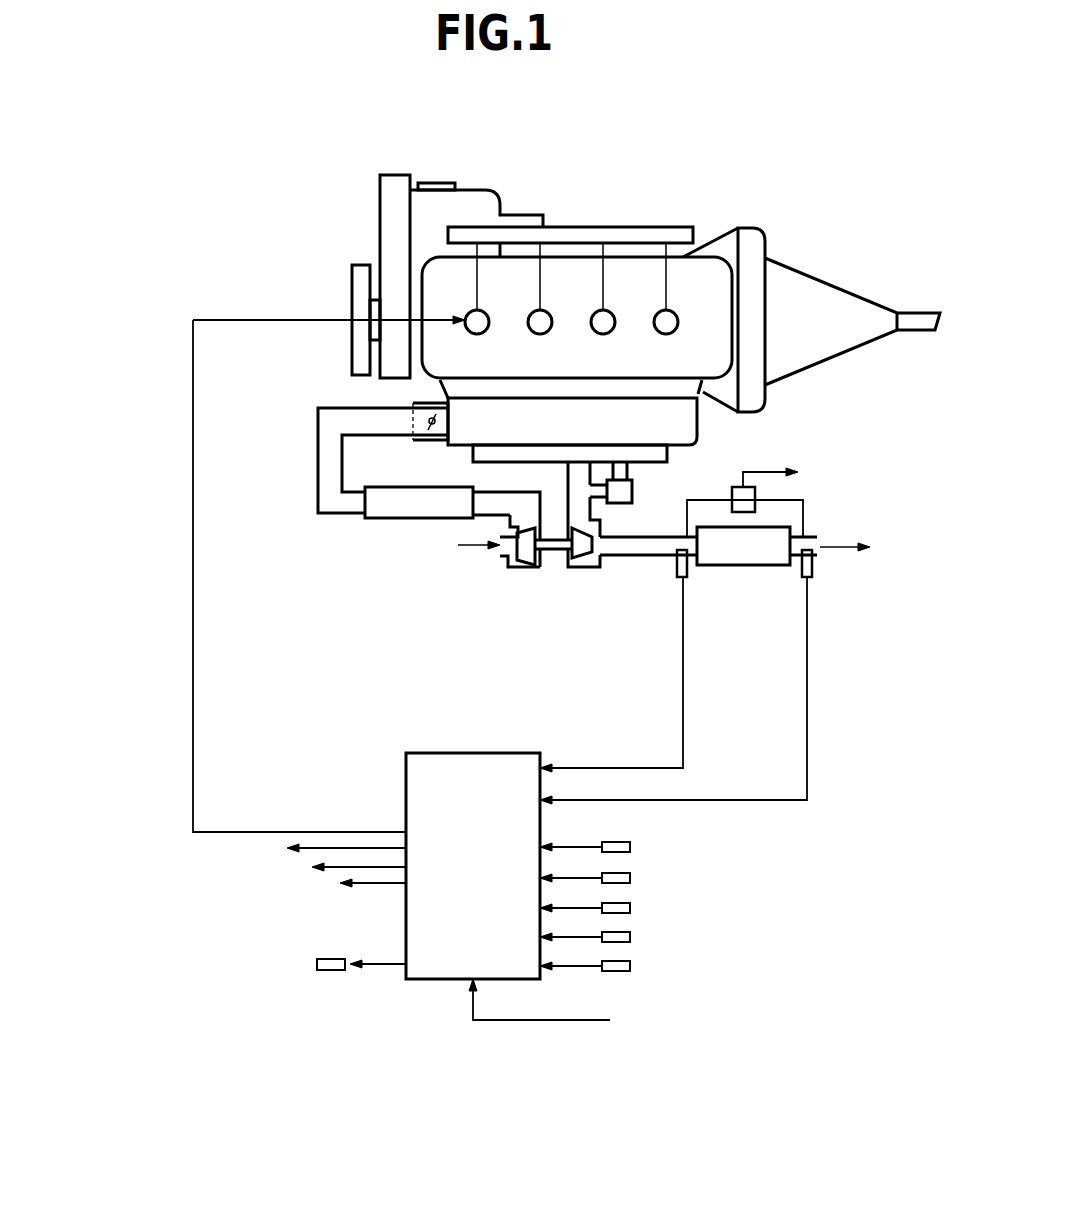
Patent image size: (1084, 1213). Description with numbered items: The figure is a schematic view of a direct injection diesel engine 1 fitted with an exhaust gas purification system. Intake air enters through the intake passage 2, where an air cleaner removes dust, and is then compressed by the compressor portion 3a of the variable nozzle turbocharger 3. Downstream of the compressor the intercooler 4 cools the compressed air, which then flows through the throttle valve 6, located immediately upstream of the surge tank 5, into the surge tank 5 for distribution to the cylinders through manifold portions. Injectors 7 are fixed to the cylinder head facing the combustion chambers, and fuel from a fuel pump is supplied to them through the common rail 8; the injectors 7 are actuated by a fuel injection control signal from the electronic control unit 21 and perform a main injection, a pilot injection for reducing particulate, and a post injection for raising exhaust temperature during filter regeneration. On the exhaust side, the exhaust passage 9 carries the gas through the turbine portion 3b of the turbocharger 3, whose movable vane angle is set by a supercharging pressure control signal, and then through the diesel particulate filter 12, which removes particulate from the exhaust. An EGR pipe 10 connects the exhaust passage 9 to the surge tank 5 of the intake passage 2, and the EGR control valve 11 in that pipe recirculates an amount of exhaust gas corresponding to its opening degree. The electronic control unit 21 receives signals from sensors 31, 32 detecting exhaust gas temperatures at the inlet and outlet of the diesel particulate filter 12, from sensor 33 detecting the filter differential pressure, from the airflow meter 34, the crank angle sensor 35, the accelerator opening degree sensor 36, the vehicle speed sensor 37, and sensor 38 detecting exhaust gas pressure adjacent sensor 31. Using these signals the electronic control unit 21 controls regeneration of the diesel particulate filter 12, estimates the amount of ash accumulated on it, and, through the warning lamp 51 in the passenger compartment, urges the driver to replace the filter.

The direct injection diesel engine 1 is at (702, 196).
The intake passage 2 is at (318, 462).
The variable nozzle turbocharger 3 is at (535, 554).
The compressor portion 3a is at (525, 570).
The turbine portion 3b is at (580, 570).
The intercooler 4 is at (395, 520).
The surge tank 5 is at (698, 432).
The throttle valve 6 is at (432, 440).
The injectors 7 is at (477, 334).
The common rail 8 is at (662, 232).
The exhaust passage 9 is at (630, 552).
The EGR pipe 10 is at (628, 470).
The EGR control valve 11 is at (633, 495).
The diesel particulate filter 12 is at (743, 565).
The electronic control unit 21 is at (500, 752).
The exhaust gas temperature sensor 31 is at (690, 576).
The exhaust gas temperature sensor 32 is at (815, 576).
The differential pressure sensor 33 is at (733, 489).
The airflow meter 34 is at (630, 847).
The crank angle sensor 35 is at (630, 878).
The accelerator opening degree sensor 36 is at (630, 908).
The vehicle speed sensor 37 is at (630, 937).
The exhaust gas pressure sensor 38 is at (630, 966).
The warning lamp 51 is at (330, 972).